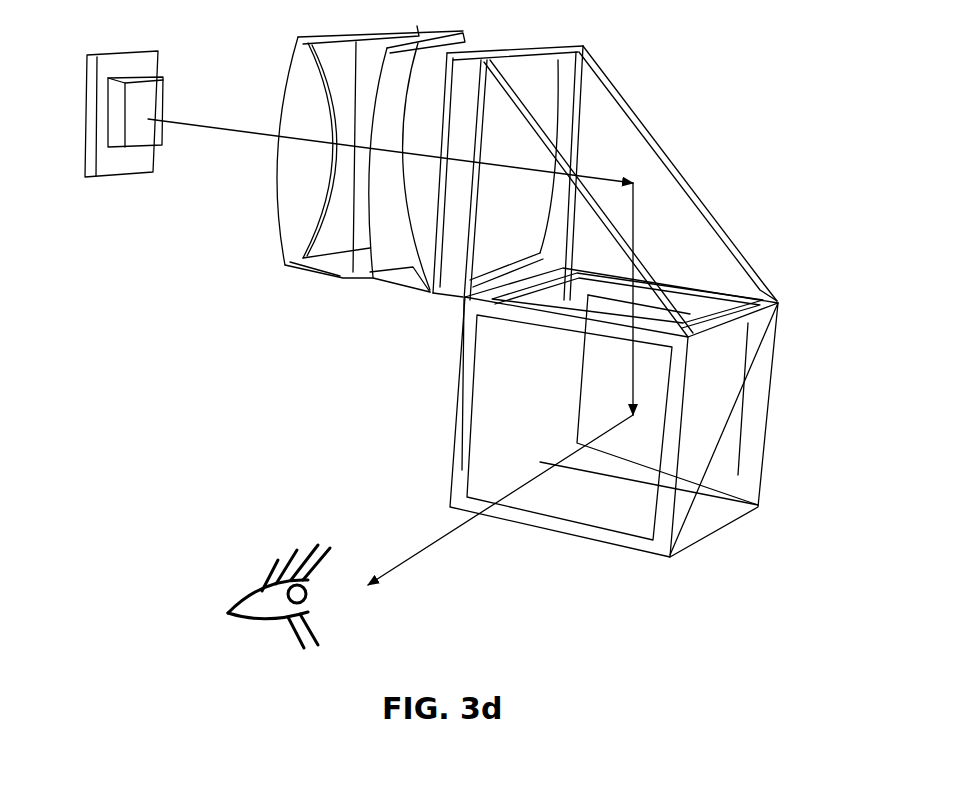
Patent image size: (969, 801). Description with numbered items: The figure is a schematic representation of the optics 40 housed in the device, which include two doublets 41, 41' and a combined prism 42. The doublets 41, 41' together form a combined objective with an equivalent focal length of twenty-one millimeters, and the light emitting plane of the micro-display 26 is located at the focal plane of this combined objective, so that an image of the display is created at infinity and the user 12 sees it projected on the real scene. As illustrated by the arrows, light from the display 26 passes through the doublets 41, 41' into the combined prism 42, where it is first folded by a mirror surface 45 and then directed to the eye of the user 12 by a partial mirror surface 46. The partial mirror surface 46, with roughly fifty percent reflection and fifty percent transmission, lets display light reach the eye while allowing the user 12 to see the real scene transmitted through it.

The micro-display 26 is at (125, 173).
The doublet 41 is at (345, 171).
The doublet 41' is at (439, 180).
The combined prism 42 is at (757, 268).
The mirror surface 45 is at (673, 193).
The optics 40 is at (547, 590).
The partial mirror surface 46 is at (703, 400).
The user 12 is at (275, 620).